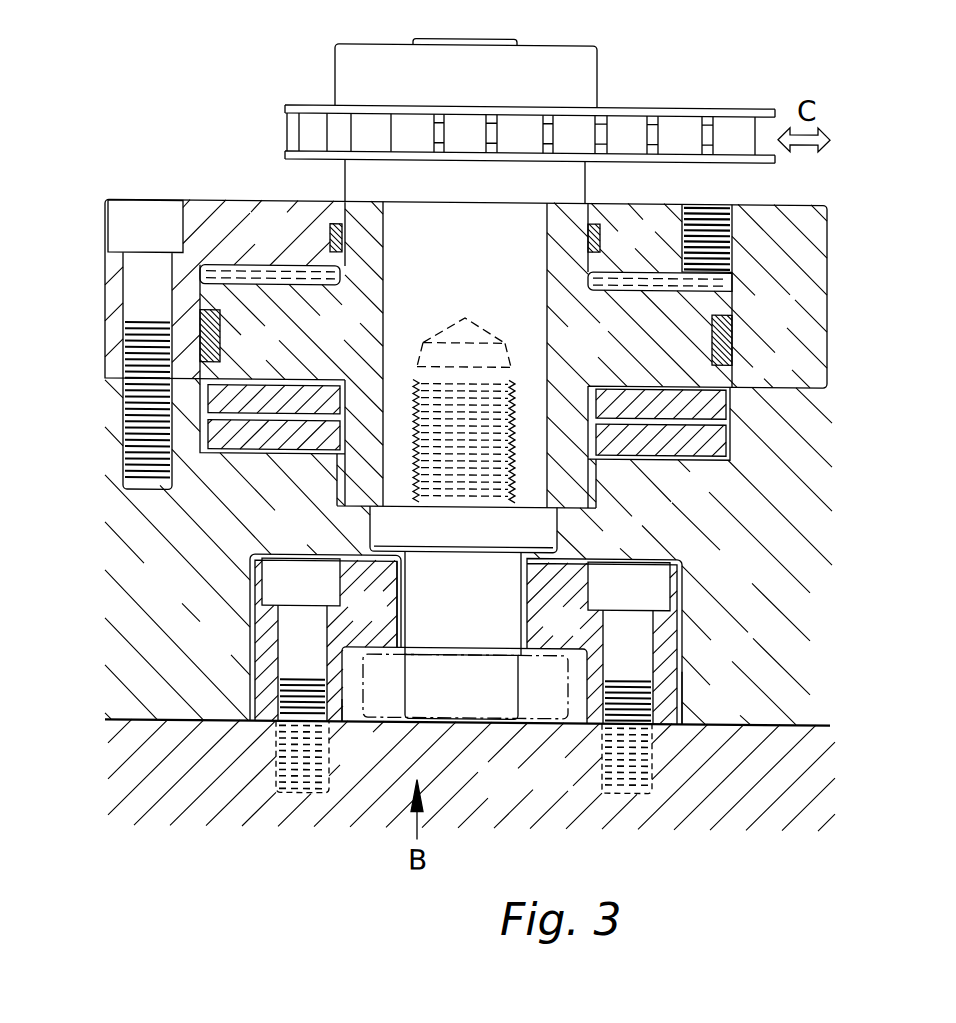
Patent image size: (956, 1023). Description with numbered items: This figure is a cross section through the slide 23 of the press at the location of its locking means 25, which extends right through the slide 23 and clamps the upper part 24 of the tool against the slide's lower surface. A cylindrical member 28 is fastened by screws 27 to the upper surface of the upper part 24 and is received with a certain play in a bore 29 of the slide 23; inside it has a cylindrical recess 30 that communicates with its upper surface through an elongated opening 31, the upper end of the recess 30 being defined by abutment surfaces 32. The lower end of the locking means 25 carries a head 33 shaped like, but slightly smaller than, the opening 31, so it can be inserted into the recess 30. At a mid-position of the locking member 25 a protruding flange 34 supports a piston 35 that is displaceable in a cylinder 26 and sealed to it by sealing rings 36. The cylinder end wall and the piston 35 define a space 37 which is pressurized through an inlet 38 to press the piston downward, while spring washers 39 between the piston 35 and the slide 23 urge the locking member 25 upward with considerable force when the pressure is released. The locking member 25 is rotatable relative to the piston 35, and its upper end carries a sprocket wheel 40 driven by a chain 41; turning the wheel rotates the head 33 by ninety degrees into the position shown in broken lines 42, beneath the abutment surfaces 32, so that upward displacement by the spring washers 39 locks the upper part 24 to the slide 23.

The slide 23 is at (181, 603).
The upper part of the tool 24 is at (516, 795).
The locking means 25 is at (466, 273).
The cylinder 26 is at (793, 323).
The clamping bolt 27 is at (292, 573).
The cylindrical member 28 is at (258, 656).
The bore 29 is at (685, 686).
The cylindrical recess 30 is at (352, 700).
The elongated opening 31 is at (522, 613).
The abutment surfaces 32 is at (355, 650).
The head 33 is at (469, 705).
The protruding flange 34 is at (485, 543).
The piston 35 is at (358, 338).
The sealing rings 36 is at (733, 348).
The space 37 is at (262, 279).
The inlet 38 is at (712, 212).
The spring washers 39 is at (265, 393).
The sprocket wheel 40 is at (577, 73).
The chain 41 is at (678, 128).
The broken lines 42 is at (571, 702).